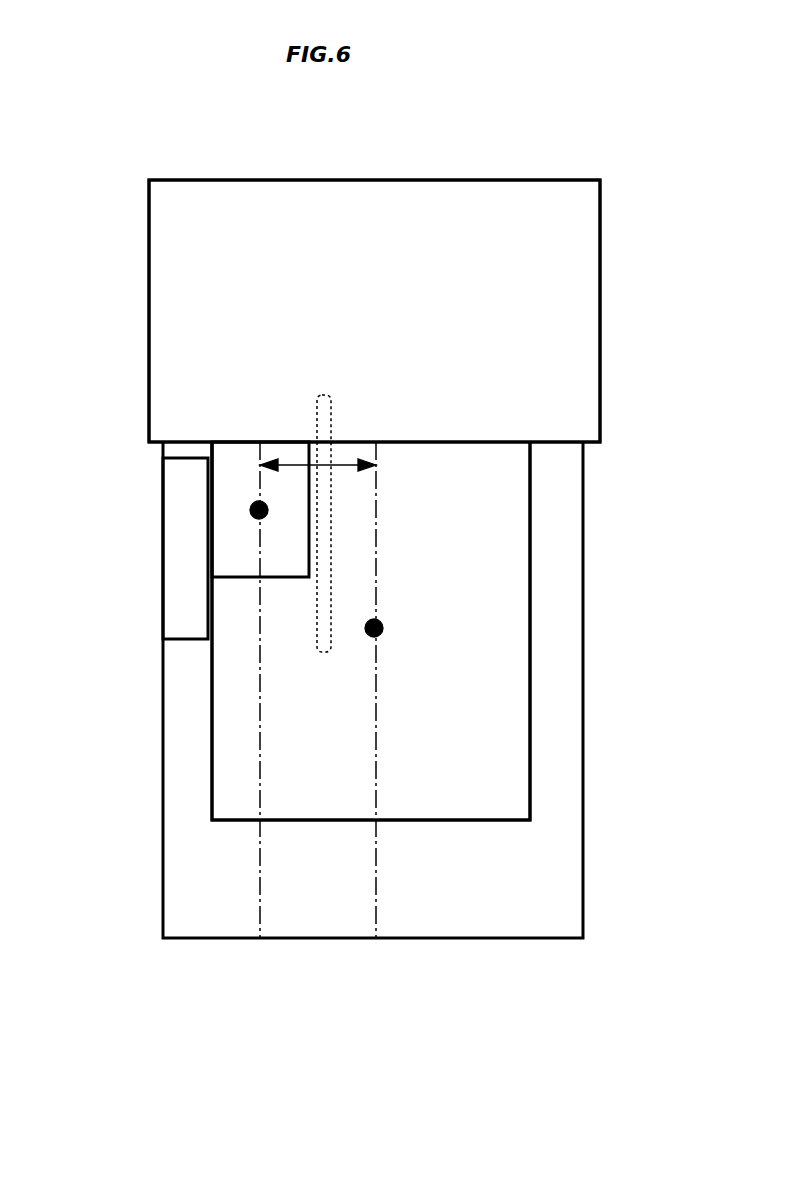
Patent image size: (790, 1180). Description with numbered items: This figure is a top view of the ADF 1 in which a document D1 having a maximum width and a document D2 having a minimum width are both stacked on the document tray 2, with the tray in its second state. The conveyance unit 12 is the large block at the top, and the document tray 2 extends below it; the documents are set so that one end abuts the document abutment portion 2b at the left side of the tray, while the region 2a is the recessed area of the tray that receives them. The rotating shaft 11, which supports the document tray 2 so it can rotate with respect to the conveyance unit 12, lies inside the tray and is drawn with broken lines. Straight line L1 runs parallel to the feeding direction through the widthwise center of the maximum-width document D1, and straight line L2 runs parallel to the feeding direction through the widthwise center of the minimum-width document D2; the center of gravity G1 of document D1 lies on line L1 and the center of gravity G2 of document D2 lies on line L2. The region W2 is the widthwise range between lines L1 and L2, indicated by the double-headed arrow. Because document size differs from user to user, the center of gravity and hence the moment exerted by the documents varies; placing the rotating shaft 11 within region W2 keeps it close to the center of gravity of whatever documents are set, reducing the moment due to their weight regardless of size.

The ADF 1 is at (138, 240).
The conveyance unit 12 is at (422, 180).
The document tray 2 is at (602, 720).
The first recess 2a is at (565, 833).
The document abutment portion 2b is at (158, 603).
The rotating shaft 11 is at (330, 510).
The document having a maximum width D1 is at (485, 570).
The document having a minimum width D2 is at (232, 547).
The center of gravity of the document having a maximum width G1 is at (383, 626).
The center of gravity of the document having a minimum width G2 is at (252, 510).
The straight line L1 is at (376, 898).
The straight line L2 is at (260, 898).
The region W2 is at (342, 462).